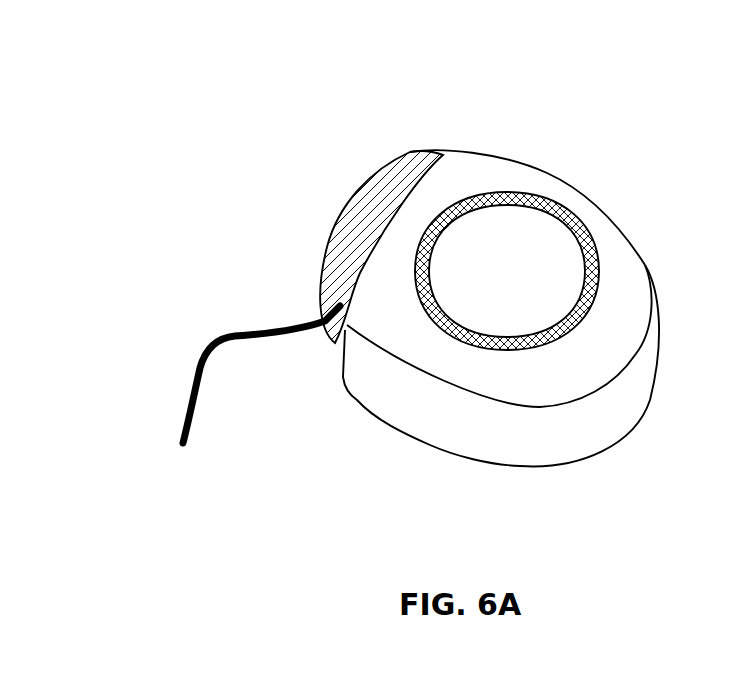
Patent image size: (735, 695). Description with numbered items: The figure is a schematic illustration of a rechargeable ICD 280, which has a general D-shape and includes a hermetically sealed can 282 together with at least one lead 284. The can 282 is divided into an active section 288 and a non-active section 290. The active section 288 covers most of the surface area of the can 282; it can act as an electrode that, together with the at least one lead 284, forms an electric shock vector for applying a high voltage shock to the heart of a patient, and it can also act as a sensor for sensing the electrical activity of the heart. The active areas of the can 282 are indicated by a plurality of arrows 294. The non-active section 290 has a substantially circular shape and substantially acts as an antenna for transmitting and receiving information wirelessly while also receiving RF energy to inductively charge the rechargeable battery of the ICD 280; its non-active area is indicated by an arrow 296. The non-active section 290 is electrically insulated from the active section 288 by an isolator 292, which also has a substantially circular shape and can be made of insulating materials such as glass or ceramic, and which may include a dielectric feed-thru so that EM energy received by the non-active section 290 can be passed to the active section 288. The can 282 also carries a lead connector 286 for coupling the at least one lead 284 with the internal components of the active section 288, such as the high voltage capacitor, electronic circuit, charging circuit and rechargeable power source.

The rechargeable ICD 280 is at (318, 112).
The can 282 is at (590, 189).
The lead 284 is at (197, 360).
The lead connector 286 is at (347, 255).
The active section 288 is at (637, 388).
The non-active section 290 is at (558, 251).
The isolator 292 is at (603, 281).
The arrows 294 is at (404, 349).
The arrow 296 is at (494, 228).